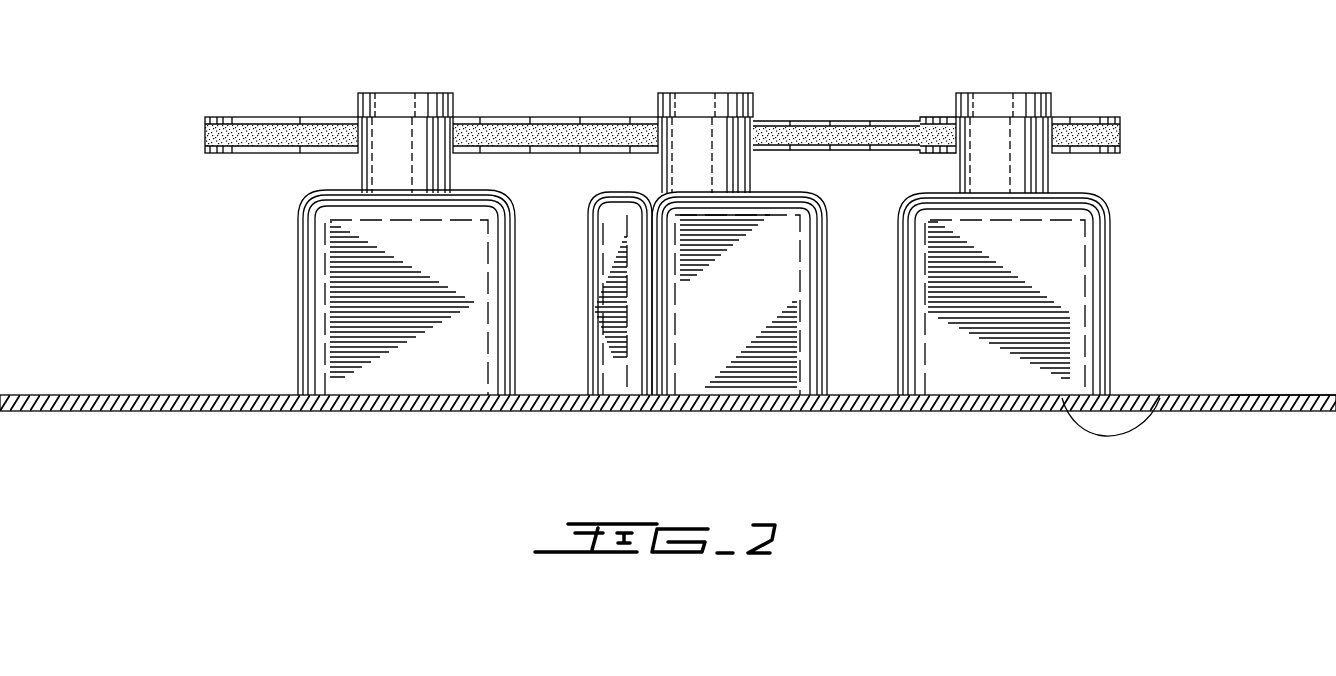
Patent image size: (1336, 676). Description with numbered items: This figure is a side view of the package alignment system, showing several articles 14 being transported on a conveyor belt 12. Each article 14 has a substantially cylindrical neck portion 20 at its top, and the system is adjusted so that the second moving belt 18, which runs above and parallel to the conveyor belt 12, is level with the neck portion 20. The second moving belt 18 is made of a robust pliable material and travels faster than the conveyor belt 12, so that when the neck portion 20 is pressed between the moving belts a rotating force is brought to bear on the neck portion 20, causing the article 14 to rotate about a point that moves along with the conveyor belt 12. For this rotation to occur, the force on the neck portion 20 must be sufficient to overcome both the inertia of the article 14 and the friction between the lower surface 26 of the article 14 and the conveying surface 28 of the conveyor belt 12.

The conveyor belt 12 is at (73, 411).
The article 14 is at (299, 300).
The second moving belt 18 is at (243, 130).
The neck portion 20 is at (753, 153).
The lower surface 26 is at (1159, 398).
The conveying surface 28 is at (1282, 396).